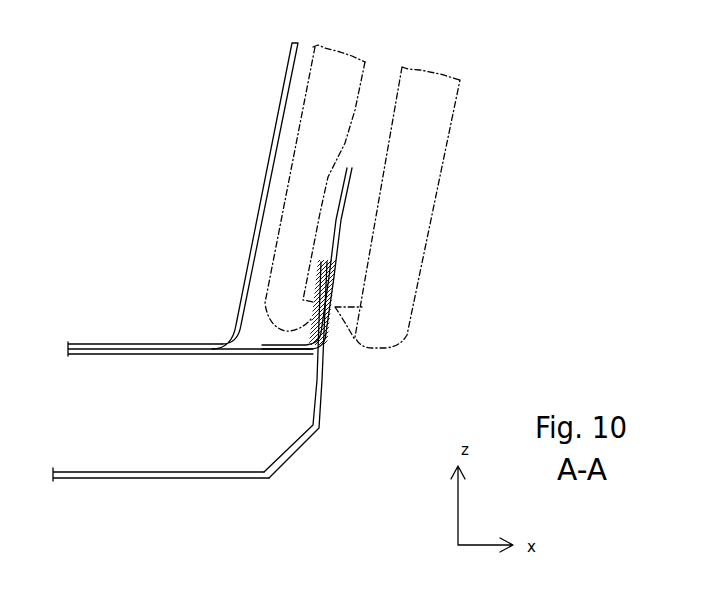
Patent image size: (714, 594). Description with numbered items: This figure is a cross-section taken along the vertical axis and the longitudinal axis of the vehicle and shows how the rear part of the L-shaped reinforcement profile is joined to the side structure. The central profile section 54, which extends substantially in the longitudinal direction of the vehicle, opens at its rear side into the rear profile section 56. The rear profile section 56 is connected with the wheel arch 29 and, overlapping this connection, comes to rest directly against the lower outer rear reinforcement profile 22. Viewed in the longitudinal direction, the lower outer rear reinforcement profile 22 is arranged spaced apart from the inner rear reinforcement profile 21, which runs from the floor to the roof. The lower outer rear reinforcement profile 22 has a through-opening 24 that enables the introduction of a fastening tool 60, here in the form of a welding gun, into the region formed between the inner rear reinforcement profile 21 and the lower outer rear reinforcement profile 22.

The inner rear reinforcement profile 21 is at (275, 155).
The lower outer rear reinforcement profile 22 is at (330, 247).
The through-opening 24 is at (352, 162).
The wheel arch 29 is at (150, 349).
The central profile section 54 is at (147, 472).
The rear profile section 56 is at (313, 402).
The fastening tool 60 is at (282, 292).